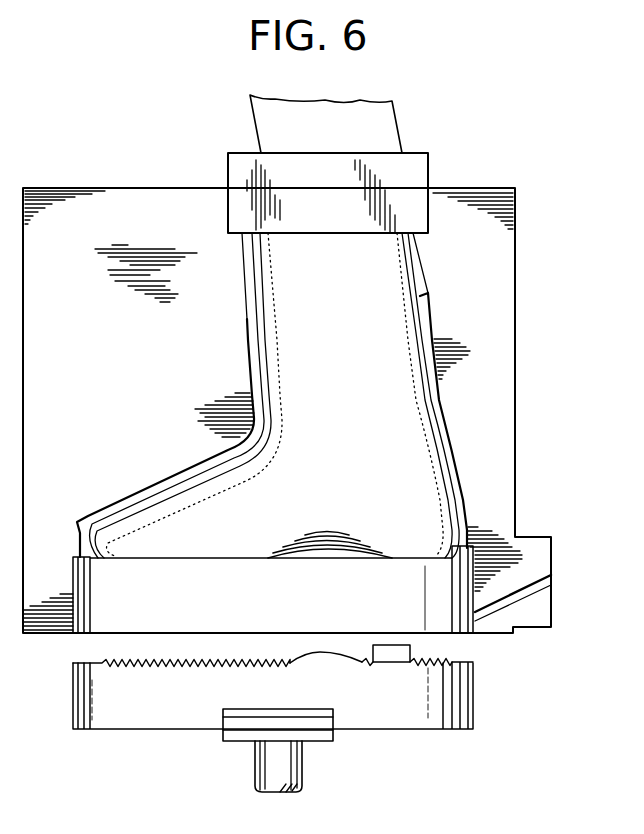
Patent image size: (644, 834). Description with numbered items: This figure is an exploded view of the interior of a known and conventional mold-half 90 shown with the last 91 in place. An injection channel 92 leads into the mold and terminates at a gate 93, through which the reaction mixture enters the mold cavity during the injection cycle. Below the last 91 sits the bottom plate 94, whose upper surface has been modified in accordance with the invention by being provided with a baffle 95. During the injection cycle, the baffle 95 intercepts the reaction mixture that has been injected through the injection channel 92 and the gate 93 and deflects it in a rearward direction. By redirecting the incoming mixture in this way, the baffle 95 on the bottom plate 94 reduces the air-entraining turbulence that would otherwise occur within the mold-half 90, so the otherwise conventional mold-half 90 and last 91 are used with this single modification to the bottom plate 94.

The mold-half 90 is at (516, 372).
The last 91 is at (334, 359).
The injection channel 92 is at (552, 583).
The gate 93 is at (477, 617).
The bottom plate 94 is at (370, 720).
The baffle 95 is at (387, 652).